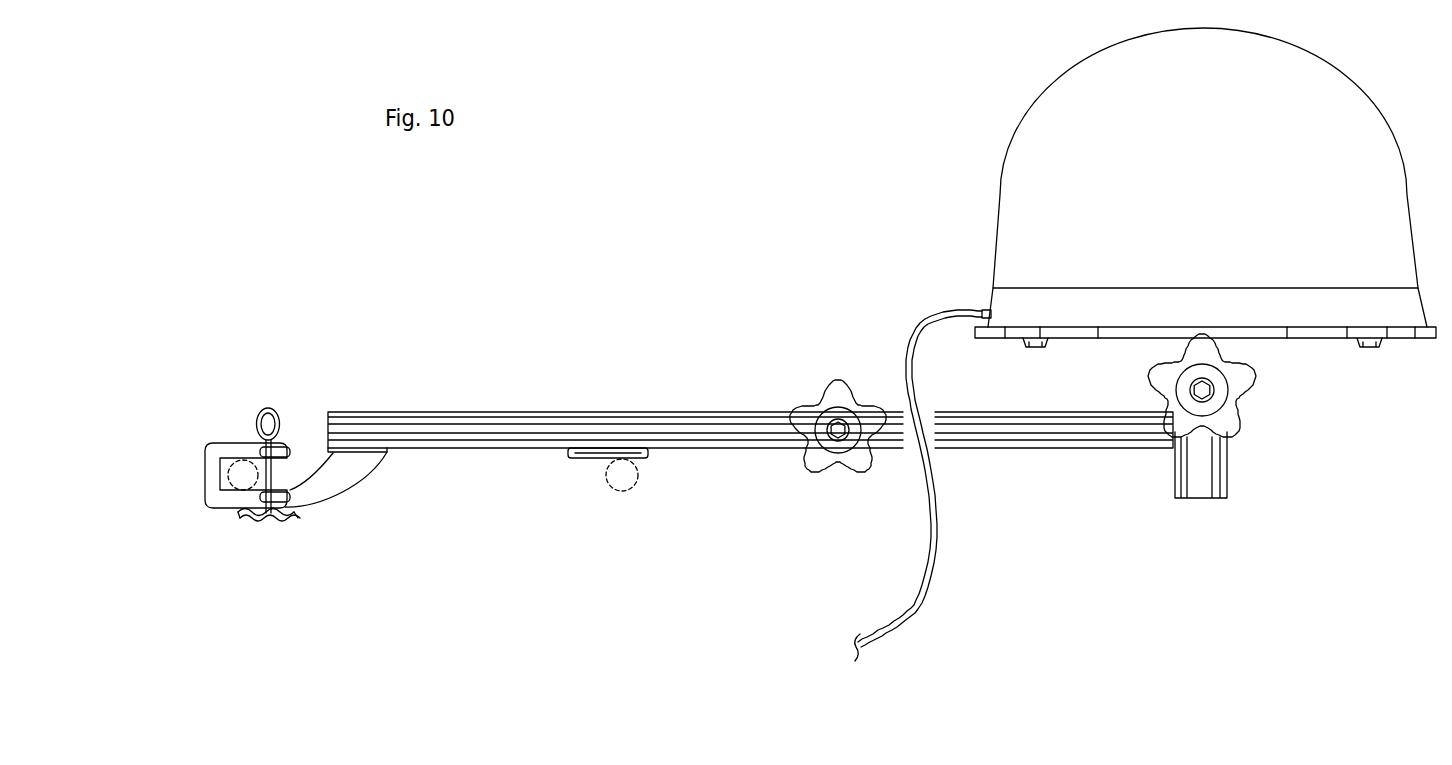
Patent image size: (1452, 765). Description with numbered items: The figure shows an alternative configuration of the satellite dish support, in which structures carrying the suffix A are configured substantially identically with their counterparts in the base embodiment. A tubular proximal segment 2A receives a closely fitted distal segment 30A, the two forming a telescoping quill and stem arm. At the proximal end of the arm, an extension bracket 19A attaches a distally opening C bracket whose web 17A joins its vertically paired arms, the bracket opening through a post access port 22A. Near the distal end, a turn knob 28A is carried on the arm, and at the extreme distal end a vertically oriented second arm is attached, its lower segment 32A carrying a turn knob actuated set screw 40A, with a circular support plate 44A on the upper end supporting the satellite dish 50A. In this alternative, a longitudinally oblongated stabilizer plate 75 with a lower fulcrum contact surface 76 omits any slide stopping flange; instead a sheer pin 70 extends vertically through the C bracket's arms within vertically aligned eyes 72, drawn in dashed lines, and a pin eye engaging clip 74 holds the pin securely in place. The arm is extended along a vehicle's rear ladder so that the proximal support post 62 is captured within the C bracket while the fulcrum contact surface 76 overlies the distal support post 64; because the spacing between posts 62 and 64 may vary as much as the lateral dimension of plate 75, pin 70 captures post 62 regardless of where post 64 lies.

The proximal segment 2A is at (505, 432).
The "C" channel web 17A is at (210, 472).
The extension bracket 19A is at (342, 478).
The post access port 22A is at (305, 450).
The adjustment knob 28A is at (837, 393).
The distal segment 30A is at (1027, 432).
The lower segment 32A is at (1210, 463).
The turn knob actuated set screw 40A is at (1242, 383).
The circular support plate 44A is at (1310, 332).
The dome housing 50A is at (1038, 147).
The proximal support post 62 is at (233, 477).
The distal support post 64 is at (620, 480).
The sheer pin 70 is at (272, 408).
The eyes 72 is at (258, 452).
The pin eye engaging clip 74 is at (243, 520).
The stabilizer plate 75 is at (580, 458).
The lower fulcrum contact surface 76 is at (590, 458).